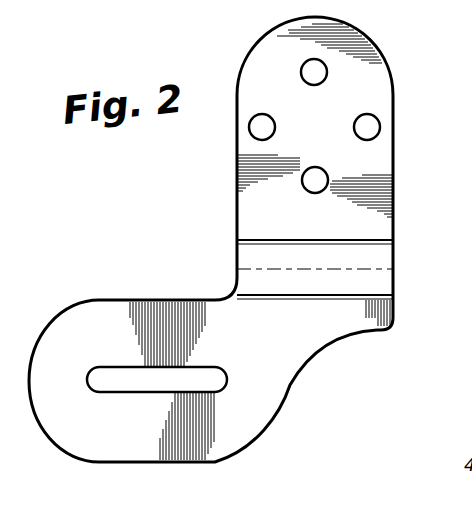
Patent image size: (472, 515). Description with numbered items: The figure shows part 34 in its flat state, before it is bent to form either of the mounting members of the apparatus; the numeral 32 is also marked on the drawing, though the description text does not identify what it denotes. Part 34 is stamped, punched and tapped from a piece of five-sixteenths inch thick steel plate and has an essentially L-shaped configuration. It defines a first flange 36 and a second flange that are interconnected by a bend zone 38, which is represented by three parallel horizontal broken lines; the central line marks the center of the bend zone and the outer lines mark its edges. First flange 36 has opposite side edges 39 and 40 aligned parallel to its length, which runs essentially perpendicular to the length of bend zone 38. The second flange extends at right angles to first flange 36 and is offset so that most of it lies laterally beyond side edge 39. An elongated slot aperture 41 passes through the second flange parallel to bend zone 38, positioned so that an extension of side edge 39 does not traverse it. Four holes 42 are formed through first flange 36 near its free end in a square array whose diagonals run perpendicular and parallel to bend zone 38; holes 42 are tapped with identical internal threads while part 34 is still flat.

The base plate 32 is at (226, 446).
The part 34 is at (222, 226).
The first flange 36 is at (388, 70).
The bend zone 38 is at (368, 297).
The side edge 39 is at (237, 174).
The side edge 40 is at (393, 172).
The elongated slot aperture 41 is at (123, 367).
The holes 42 is at (322, 66).